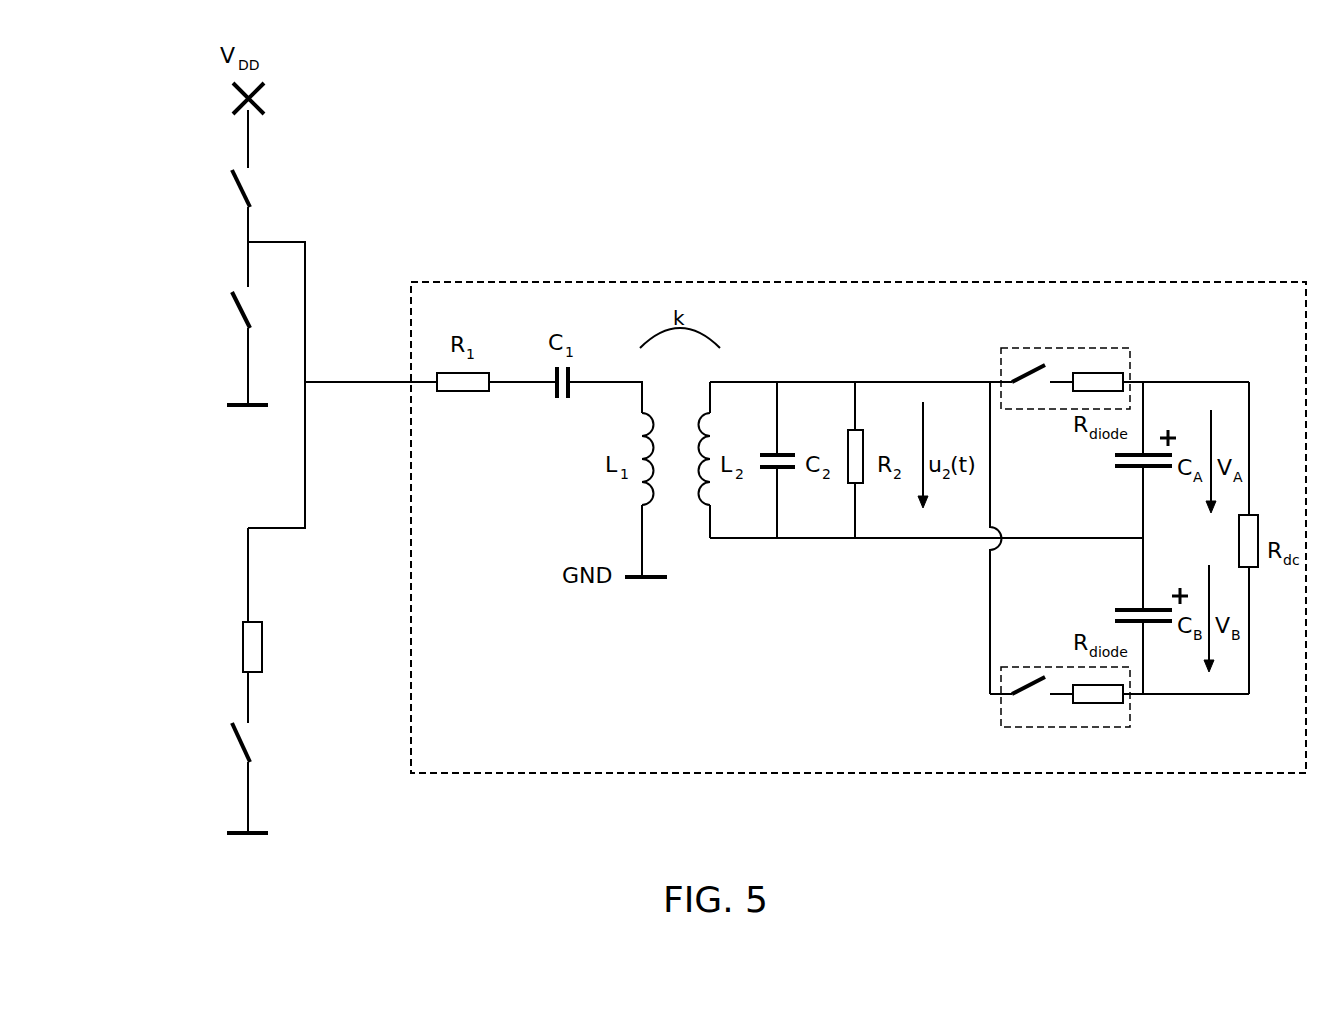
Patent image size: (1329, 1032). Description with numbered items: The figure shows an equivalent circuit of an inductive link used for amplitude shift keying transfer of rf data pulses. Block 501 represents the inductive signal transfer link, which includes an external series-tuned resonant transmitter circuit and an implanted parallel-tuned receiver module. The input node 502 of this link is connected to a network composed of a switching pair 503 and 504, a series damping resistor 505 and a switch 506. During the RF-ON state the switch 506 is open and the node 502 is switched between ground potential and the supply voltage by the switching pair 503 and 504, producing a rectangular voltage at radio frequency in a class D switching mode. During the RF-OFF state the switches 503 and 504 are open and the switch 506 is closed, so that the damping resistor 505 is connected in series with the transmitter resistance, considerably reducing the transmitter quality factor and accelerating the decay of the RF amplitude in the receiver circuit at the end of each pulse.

The inductive signal transfer link 501 is at (752, 282).
The input node 502 is at (315, 373).
The switch of switching pair 503 is at (230, 187).
The switch of switching pair 504 is at (230, 310).
The series damping resistor 505 is at (243, 645).
The switch 506 is at (230, 738).